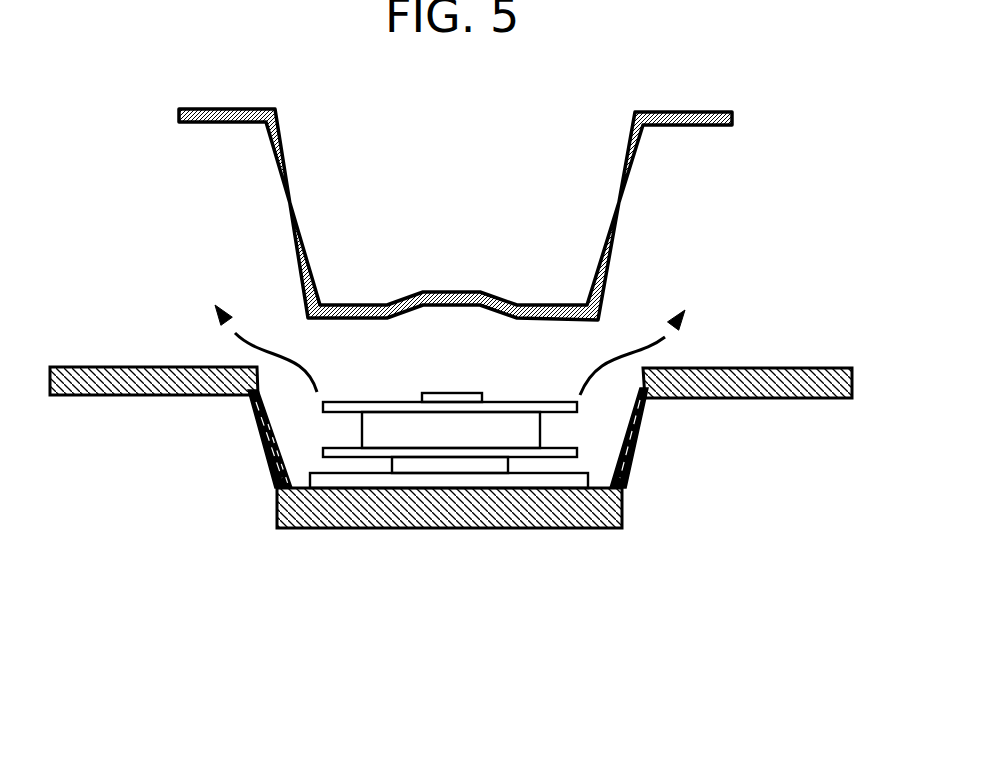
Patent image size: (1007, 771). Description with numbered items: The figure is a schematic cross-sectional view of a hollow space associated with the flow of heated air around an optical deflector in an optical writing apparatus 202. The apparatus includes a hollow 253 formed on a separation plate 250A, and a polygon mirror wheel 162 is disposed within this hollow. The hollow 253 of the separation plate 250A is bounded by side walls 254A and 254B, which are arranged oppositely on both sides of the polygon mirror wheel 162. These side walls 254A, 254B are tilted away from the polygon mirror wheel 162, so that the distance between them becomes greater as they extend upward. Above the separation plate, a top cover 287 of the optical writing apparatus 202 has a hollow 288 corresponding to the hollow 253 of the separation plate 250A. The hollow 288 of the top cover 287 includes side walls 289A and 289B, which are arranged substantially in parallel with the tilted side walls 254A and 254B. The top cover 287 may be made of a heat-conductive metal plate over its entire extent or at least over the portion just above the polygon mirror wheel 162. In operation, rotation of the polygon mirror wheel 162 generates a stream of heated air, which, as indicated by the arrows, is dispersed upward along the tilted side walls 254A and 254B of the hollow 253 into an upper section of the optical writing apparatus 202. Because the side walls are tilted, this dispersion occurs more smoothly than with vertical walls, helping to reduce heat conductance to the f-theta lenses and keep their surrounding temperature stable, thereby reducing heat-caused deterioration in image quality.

The optical writing apparatus 202 is at (766, 196).
The separation plate 250A is at (740, 378).
The hollow 253 is at (257, 420).
The side wall 254A is at (268, 460).
The side wall 254B is at (628, 458).
The polygon mirror wheel 162 is at (500, 425).
The top cover 287 is at (676, 112).
The hollow 288 is at (440, 186).
The side wall 289A is at (285, 210).
The side wall 289B is at (620, 208).